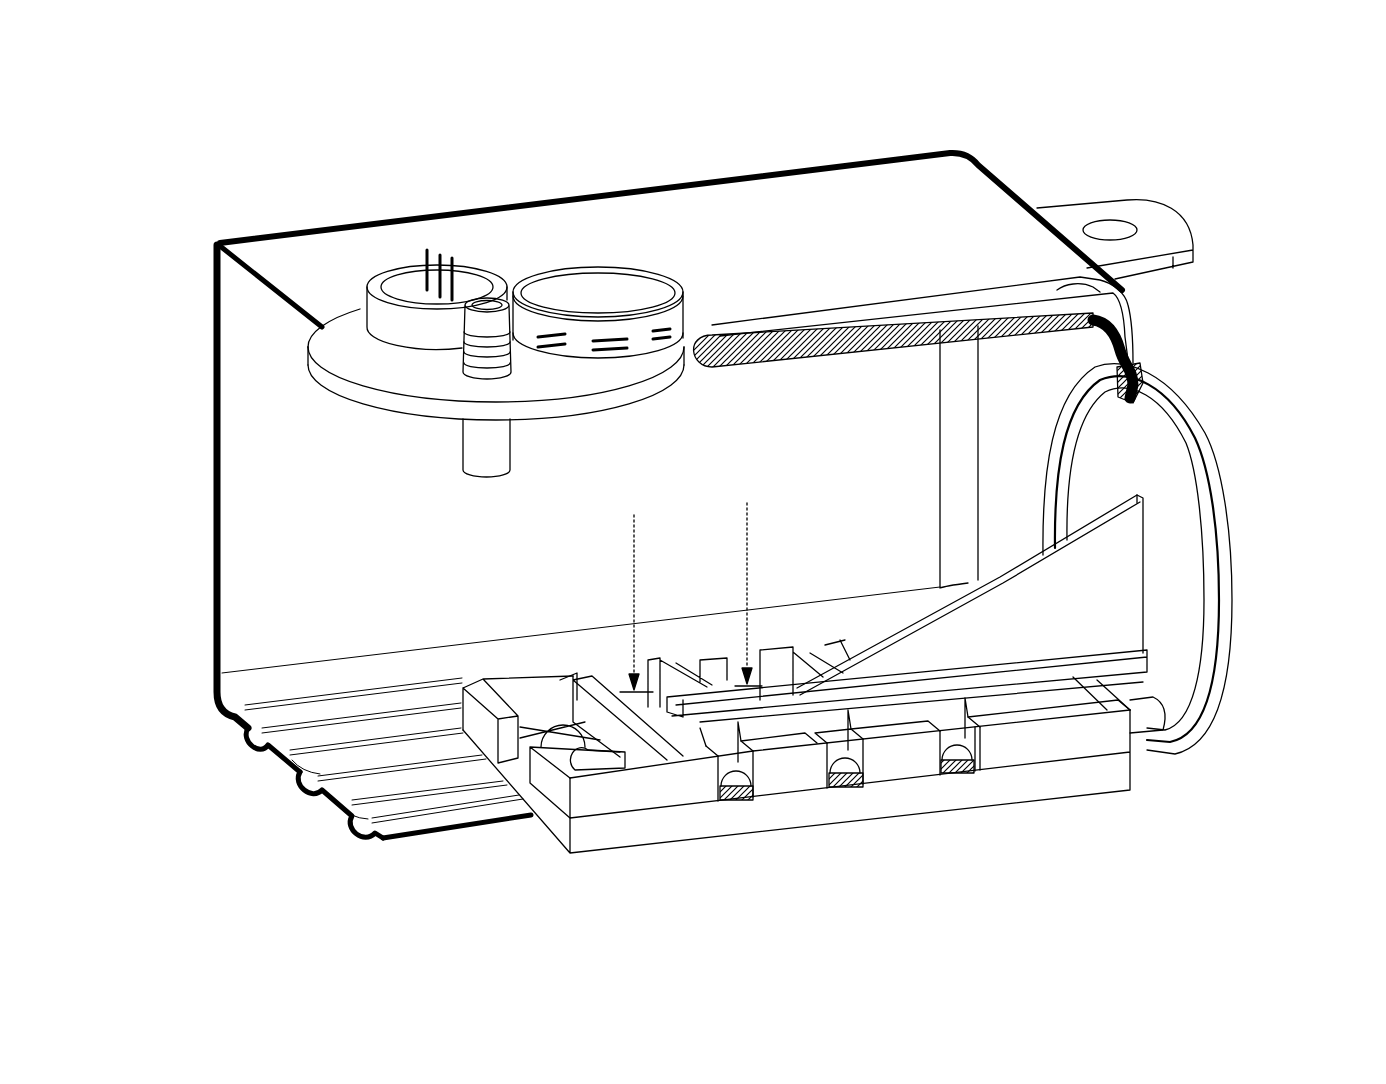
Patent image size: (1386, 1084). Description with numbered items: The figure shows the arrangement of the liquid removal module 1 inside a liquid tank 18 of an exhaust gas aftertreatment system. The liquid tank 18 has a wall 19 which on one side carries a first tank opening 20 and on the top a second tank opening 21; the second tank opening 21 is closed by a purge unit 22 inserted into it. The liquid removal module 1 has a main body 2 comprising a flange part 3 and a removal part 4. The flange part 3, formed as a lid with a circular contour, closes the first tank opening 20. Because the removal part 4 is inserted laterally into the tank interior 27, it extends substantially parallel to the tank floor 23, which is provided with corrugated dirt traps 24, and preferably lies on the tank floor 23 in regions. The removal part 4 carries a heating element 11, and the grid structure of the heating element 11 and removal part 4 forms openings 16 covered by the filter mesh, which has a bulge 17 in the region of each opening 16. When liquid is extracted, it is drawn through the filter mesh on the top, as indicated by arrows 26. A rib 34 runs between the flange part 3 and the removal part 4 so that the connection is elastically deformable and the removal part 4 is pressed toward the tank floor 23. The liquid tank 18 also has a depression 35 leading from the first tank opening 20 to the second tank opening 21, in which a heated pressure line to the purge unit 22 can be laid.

The liquid removal module 1 is at (208, 203).
The main body 2 is at (1167, 581).
The flange part 3 is at (1183, 445).
The removal part 4 is at (1113, 772).
The heating element 11 is at (1095, 735).
The openings 16 is at (687, 733).
The bulge 17 is at (737, 800).
The liquid tank 18 is at (796, 220).
The wall 19 is at (980, 212).
The first tank opening 20 is at (1140, 420).
The second tank opening 21 is at (667, 290).
The purge unit 22 is at (516, 270).
The tank floor 23 is at (263, 717).
The corrugated dirt traps 24 is at (290, 757).
The arrows 26 is at (634, 576).
The tank interior 27 is at (258, 477).
The rib 34 is at (1117, 550).
The depression 35 is at (1128, 292).